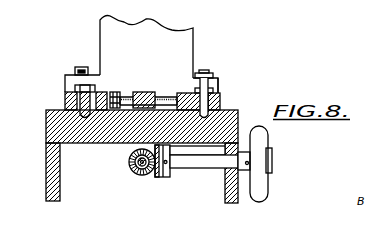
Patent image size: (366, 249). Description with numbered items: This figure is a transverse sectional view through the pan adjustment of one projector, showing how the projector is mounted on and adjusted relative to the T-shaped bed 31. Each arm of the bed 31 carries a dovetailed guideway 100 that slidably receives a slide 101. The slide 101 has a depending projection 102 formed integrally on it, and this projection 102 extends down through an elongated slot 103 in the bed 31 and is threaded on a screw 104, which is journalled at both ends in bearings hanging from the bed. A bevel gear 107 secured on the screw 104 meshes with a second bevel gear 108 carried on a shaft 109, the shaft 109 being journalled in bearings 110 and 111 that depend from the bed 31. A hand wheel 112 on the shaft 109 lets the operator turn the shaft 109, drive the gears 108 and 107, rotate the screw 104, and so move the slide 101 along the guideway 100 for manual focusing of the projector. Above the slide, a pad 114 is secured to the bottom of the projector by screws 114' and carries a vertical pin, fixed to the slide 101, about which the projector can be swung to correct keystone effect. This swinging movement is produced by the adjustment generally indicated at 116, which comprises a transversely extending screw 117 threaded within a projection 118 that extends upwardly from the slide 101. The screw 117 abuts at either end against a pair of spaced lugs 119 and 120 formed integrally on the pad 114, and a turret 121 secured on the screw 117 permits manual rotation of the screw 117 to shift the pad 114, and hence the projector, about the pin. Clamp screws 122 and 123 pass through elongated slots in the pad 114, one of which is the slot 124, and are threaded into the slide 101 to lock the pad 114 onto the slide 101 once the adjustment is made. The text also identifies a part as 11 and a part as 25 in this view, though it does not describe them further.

The housing part 11 is at (204, 27).
The support block 25 is at (220, 88).
The T-shaped bed 31 is at (47, 148).
The dovetailed guideway 100 is at (58, 113).
The slide 101 is at (67, 108).
The depending projection 102 is at (127, 162).
The elongated slot 103 is at (128, 149).
The screw 104 is at (134, 171).
The bevel gear 107 is at (146, 176).
The second bevel gear 108 is at (163, 170).
The shaft 109 is at (222, 163).
The bearing 110 is at (180, 151).
The bearing 111 is at (241, 151).
The hand wheel 112 is at (263, 148).
The pad 114 is at (216, 101).
The screws 114' is at (223, 71).
The adjustment 116 is at (164, 77).
The transversely extending screw 117 is at (178, 97).
The projection 118 is at (135, 97).
The lug 119 is at (102, 98).
The lug 120 is at (198, 73).
The turret 121 is at (117, 97).
The clamp screw 122 is at (83, 102).
The clamp screw 123 is at (219, 80).
The elongated slot 124 is at (82, 98).